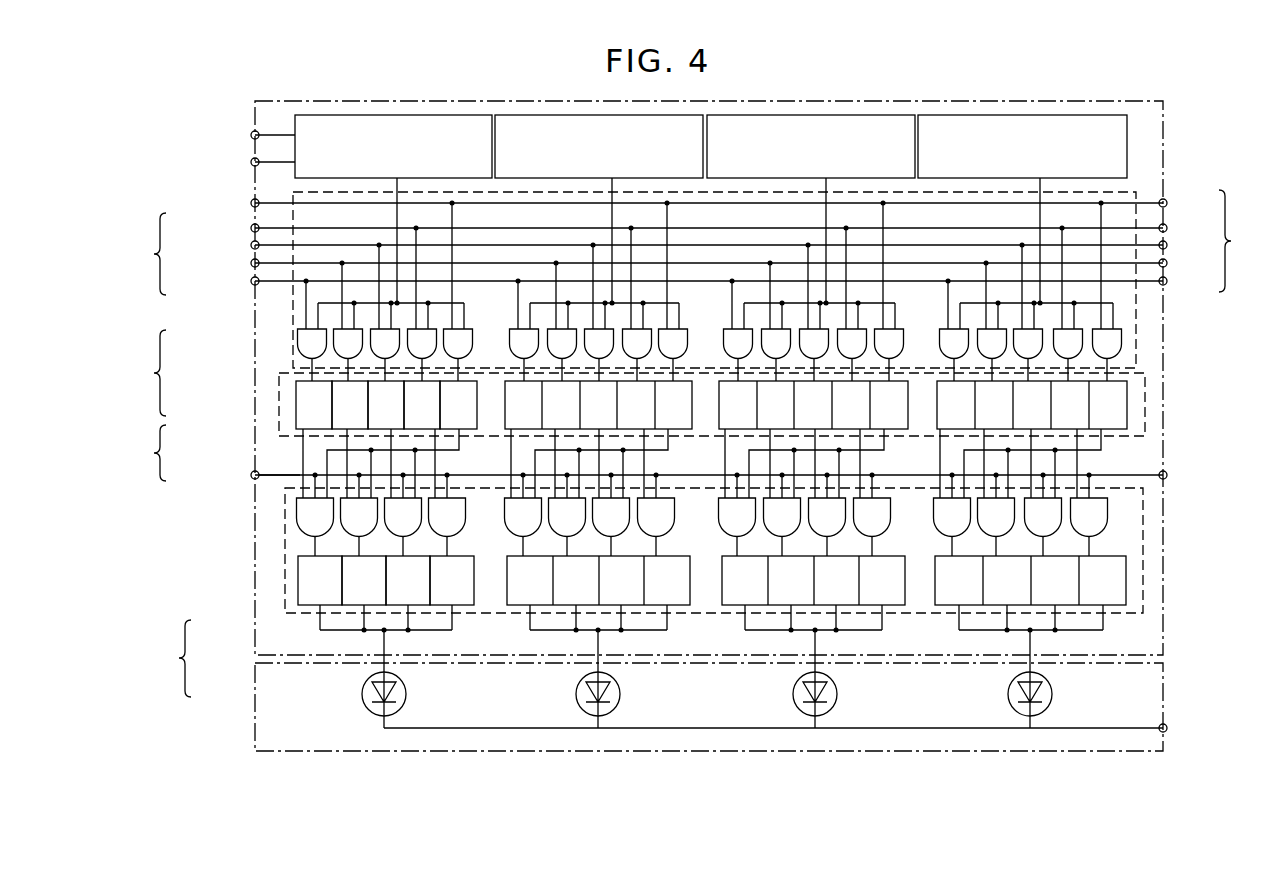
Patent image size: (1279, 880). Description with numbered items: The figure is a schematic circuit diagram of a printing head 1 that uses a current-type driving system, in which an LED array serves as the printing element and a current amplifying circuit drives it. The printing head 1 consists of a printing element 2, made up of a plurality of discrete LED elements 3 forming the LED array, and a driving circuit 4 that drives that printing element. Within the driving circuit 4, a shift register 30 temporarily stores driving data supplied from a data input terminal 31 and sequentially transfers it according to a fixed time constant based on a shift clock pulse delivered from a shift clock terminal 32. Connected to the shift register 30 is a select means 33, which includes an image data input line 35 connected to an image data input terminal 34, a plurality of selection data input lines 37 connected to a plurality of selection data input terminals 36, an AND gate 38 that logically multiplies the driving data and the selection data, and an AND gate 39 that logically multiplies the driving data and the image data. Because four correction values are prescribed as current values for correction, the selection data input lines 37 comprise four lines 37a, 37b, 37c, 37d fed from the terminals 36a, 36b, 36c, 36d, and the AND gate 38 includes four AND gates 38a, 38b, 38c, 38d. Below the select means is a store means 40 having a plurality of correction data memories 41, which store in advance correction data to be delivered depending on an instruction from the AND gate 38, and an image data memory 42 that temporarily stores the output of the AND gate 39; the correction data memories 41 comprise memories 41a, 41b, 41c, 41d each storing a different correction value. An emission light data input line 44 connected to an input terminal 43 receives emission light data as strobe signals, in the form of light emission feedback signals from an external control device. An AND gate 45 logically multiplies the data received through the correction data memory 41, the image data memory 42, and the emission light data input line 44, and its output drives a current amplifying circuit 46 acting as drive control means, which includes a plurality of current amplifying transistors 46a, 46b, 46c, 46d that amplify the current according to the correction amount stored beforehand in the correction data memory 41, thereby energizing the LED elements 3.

The printing head 1 is at (176, 666).
The printing element 2 is at (255, 703).
The LED elements 3 is at (407, 690).
The driving circuit 4 is at (255, 612).
The shift register 30 is at (360, 115).
The data input terminal 31 is at (250, 135).
The shift clock terminal 32 is at (250, 162).
The select means 33 is at (293, 320).
The image data input terminal 34 is at (250, 203).
The image data input line 35 is at (282, 203).
The selection data input terminals 36 is at (150, 266).
The selection data input terminal 36a is at (250, 281).
The selection data input terminal 36b is at (250, 263).
The selection data input terminal 36c is at (250, 245).
The selection data input terminal 36d is at (250, 228).
The selection data input lines 37 is at (1257, 251).
The selection data input line 37a is at (1167, 281).
The selection data input line 37b is at (1167, 263).
The selection data input line 37c is at (1167, 243).
The selection data input line 37d is at (1167, 228).
The AND gate 38 is at (150, 387).
The AND gate 38a is at (300, 340).
The AND gate 38b is at (345, 358).
The AND gate 38c is at (385, 358).
The AND gate 38d is at (422, 358).
The AND gate 39 is at (470, 340).
The store means 40 is at (150, 472).
The correction data memories 41 is at (297, 415).
The correction data memory 41a is at (314, 405).
The correction data memory 41b is at (350, 405).
The correction data memory 41c is at (386, 405).
The correction data memory 41d is at (422, 405).
The image data memory 42 is at (458, 420).
The input terminal 43 is at (252, 480).
The emission light data input line 44 is at (265, 475).
The AND gate 45 is at (297, 510).
The current amplifying circuit 46 is at (298, 580).
The current amplifying transistor 46a is at (320, 580).
The current amplifying transistor 46b is at (364, 580).
The current amplifying transistor 46c is at (408, 580).
The current amplifying transistor 46d is at (452, 580).